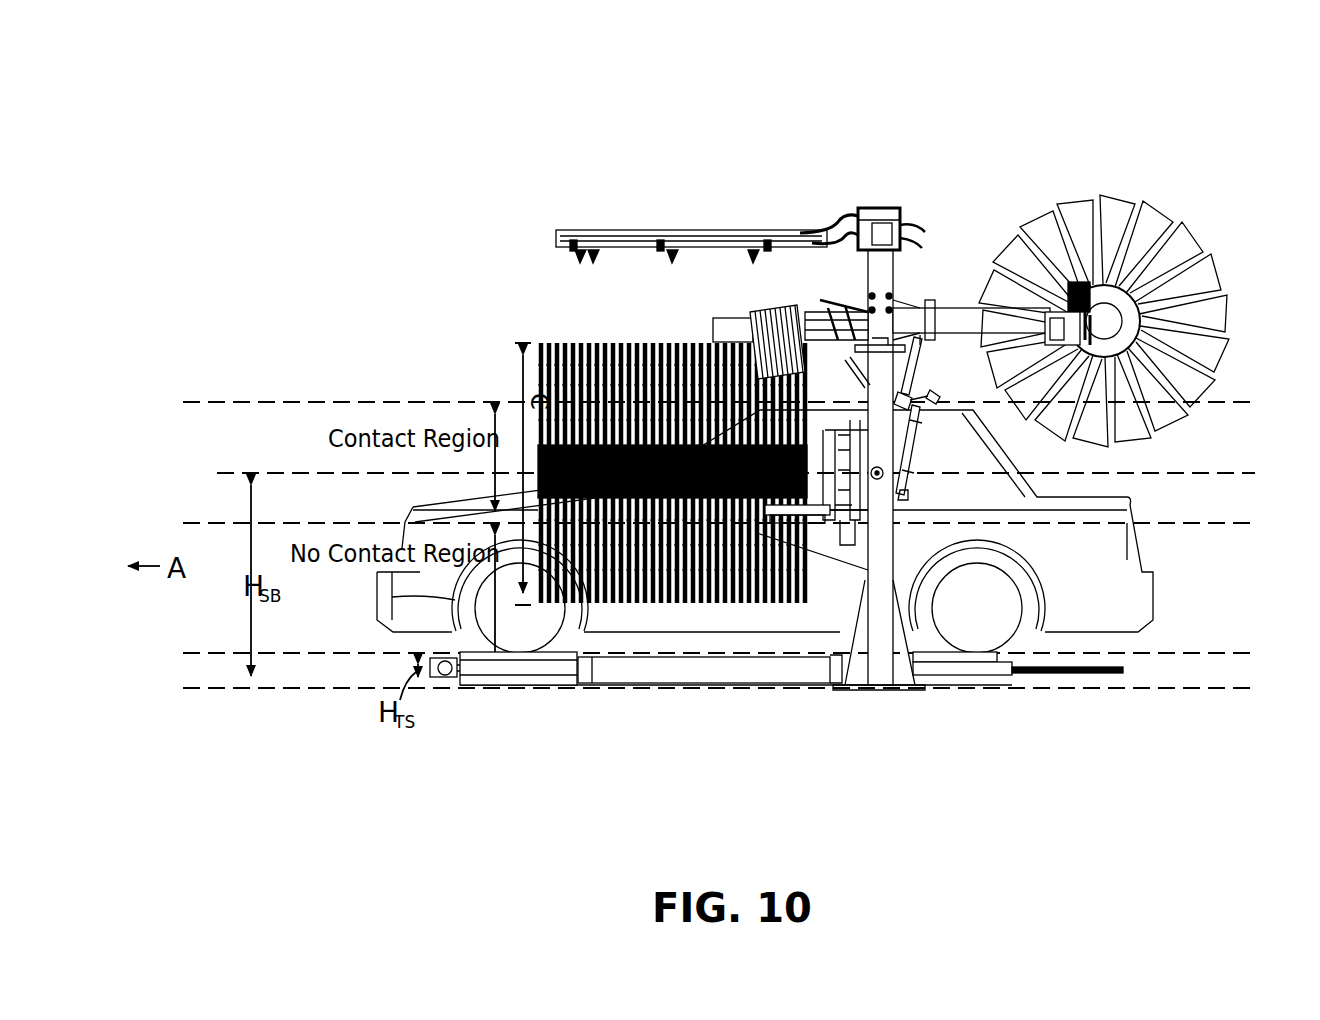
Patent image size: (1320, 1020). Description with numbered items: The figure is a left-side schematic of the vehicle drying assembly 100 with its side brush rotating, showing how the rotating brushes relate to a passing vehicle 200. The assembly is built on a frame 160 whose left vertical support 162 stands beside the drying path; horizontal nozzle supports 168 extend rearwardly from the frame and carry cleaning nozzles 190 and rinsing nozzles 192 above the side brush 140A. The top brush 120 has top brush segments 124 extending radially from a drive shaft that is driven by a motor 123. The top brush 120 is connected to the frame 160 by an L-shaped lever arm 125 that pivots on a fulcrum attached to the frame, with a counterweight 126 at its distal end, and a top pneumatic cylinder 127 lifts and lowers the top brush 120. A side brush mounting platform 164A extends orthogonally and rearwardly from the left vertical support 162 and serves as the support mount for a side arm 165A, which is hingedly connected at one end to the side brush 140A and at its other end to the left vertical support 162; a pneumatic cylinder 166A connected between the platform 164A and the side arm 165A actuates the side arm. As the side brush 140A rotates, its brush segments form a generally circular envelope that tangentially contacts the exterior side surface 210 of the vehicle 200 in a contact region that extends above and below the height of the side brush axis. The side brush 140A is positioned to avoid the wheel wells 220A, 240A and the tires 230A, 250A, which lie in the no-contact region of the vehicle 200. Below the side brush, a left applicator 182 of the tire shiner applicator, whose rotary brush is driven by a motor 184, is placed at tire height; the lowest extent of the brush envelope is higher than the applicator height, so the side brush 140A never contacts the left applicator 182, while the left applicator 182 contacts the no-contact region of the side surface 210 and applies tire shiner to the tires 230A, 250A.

The vehicle drying assembly 100 is at (338, 120).
The top brush 120 is at (1175, 223).
The motor 123 is at (1070, 328).
The top brush segments 124 is at (1205, 280).
The lever arm 125 is at (957, 318).
The counterweight 126 is at (787, 320).
The top pneumatic cylinder 127 is at (920, 360).
The side brush 140A is at (572, 345).
The frame 160 is at (882, 210).
The left vertical support 162 is at (883, 505).
The side brush mounting platform 164A is at (843, 550).
The side arm 165A is at (852, 457).
The pneumatic cylinder 166A is at (793, 520).
The horizontal nozzle supports 168 is at (605, 232).
The left applicator 182 is at (672, 685).
The motor 184 is at (445, 672).
The cleaning nozzles 190 is at (578, 262).
The rinsing nozzles 192 is at (593, 262).
The vehicle 200 is at (1130, 497).
The exterior side surface 210 is at (767, 620).
The wheel well 220A is at (430, 597).
The tire 230A is at (572, 622).
The wheel well 240A is at (1078, 572).
The tire 250A is at (1020, 623).